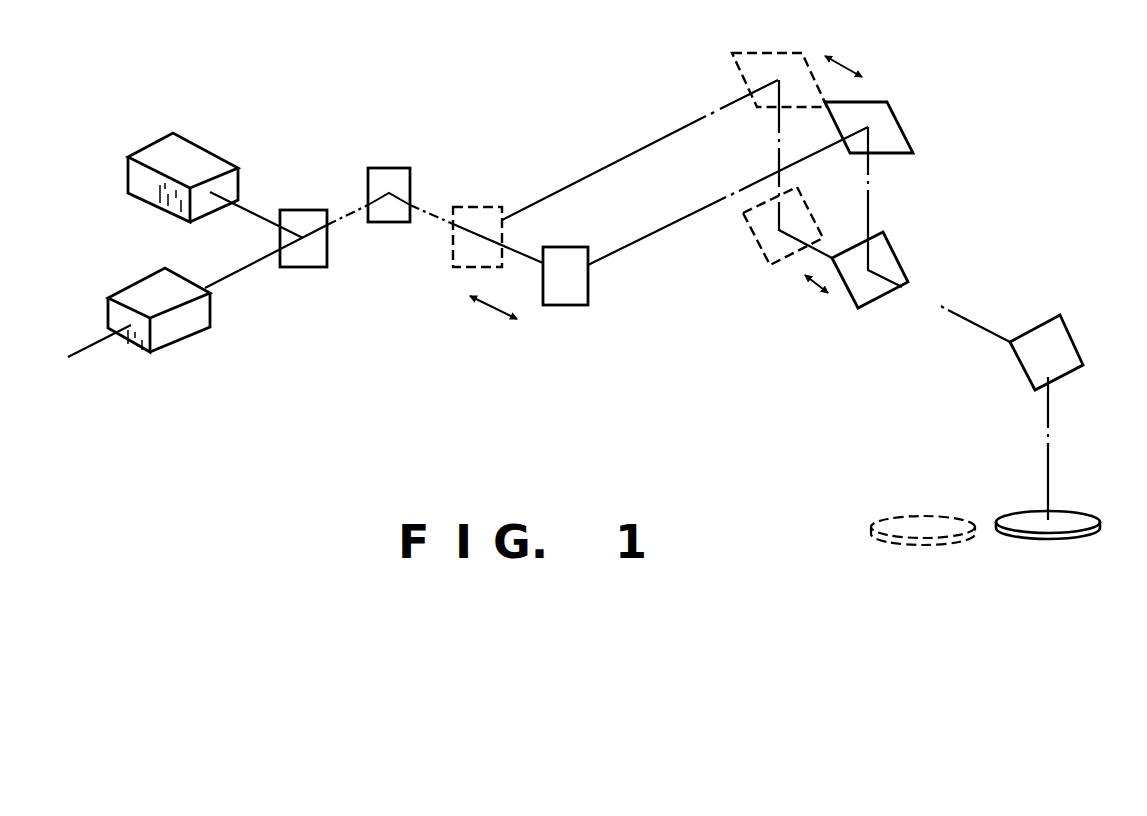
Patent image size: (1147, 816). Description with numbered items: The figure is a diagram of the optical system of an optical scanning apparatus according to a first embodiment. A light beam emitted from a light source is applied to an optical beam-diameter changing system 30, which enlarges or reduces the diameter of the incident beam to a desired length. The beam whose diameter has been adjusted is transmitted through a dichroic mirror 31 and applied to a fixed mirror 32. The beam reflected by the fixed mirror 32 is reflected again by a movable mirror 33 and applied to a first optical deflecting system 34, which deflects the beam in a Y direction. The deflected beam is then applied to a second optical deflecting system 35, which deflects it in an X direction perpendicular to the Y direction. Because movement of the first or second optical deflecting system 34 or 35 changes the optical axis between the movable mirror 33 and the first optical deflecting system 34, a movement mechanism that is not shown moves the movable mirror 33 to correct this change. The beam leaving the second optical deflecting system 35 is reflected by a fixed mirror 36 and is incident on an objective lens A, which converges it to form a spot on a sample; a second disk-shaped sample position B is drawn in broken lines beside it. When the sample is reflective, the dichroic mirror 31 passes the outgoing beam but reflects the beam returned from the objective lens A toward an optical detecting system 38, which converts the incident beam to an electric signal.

The optical beam-diameter changing system 30 is at (188, 330).
The optical detecting system 38 is at (212, 154).
The dichroic mirror 31 is at (307, 262).
The fixed mirror 32 is at (390, 168).
The movable mirror 33 is at (520, 280).
The first optical deflecting system 34 is at (900, 120).
The second optical deflecting system 35 is at (900, 257).
The fixed mirror 36 is at (1067, 328).
The objective lens A is at (1098, 525).
The optical disk in displaced position B is at (910, 514).